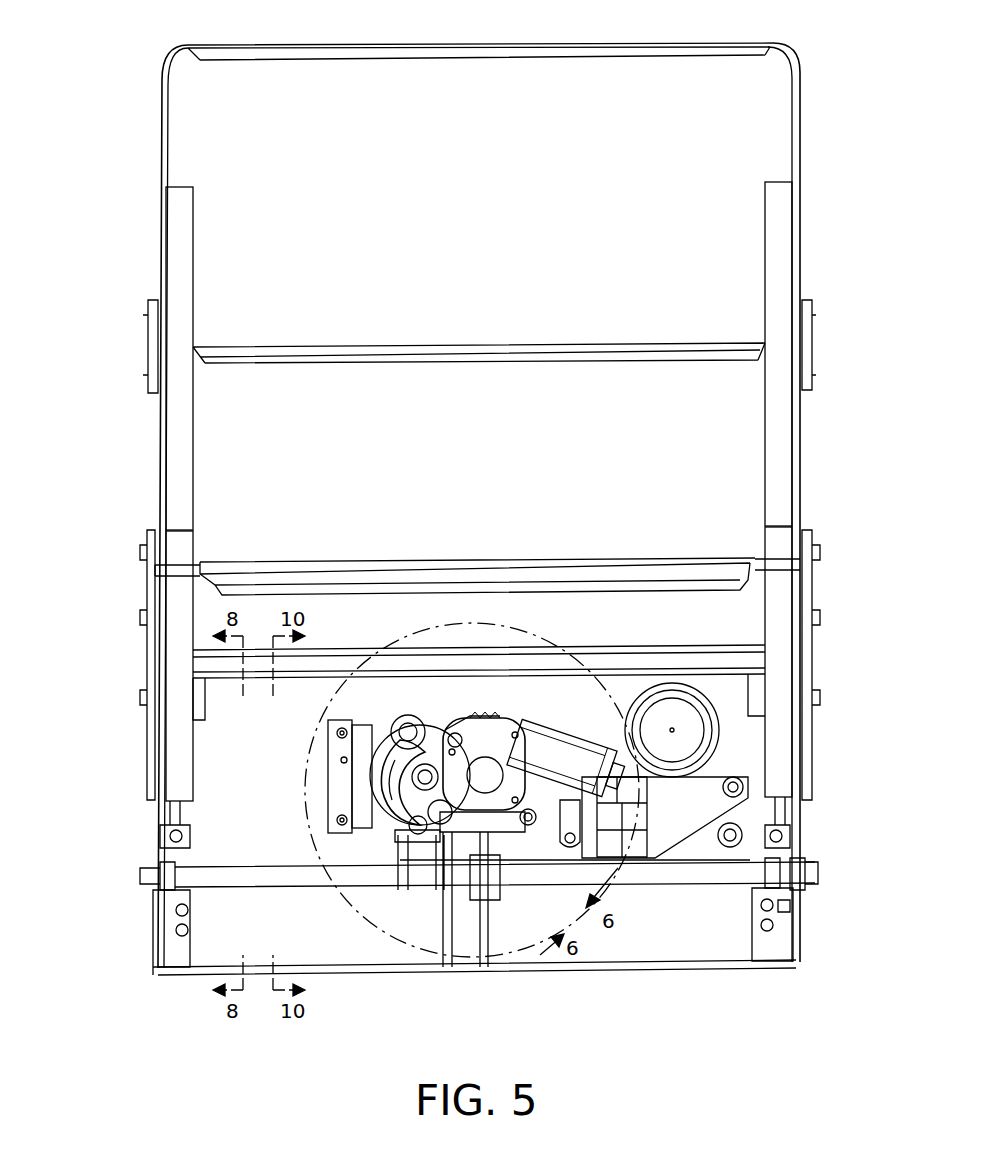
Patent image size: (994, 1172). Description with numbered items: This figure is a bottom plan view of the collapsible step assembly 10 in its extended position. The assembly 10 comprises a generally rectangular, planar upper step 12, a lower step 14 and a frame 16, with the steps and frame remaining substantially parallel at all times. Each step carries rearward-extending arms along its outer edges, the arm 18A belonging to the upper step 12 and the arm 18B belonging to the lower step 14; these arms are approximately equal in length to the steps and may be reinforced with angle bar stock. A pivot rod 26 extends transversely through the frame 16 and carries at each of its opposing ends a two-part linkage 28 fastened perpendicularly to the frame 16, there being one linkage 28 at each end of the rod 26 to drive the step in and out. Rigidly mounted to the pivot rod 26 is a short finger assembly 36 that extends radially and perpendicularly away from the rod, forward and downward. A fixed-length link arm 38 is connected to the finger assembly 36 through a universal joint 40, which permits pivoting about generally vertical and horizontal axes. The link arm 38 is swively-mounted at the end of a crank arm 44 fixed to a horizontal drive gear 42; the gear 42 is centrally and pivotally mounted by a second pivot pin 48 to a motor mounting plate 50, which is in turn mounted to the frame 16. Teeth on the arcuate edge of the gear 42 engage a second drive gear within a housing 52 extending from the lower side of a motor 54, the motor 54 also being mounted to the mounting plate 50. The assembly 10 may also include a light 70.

The collapsible step assembly 10 is at (90, 104).
The upper step 12 is at (742, 403).
The lower step 14 is at (776, 66).
The frame 16 is at (772, 955).
The arm of upper step 18A is at (775, 638).
The arm of lower step 18B is at (777, 258).
The pivot rod 26 is at (715, 873).
The two-part linkage 28 is at (792, 862).
The finger assembly 36 is at (414, 822).
The link arm 38 is at (372, 770).
The universal joint 40 is at (407, 822).
The horizontal drive gear 42 is at (430, 750).
The crank arm 44 is at (443, 745).
The second pivot pin 48 is at (412, 826).
The motor mounting plate 50 is at (408, 725).
The housing 52 is at (500, 760).
The motor 54 is at (570, 762).
The light 70 is at (690, 736).